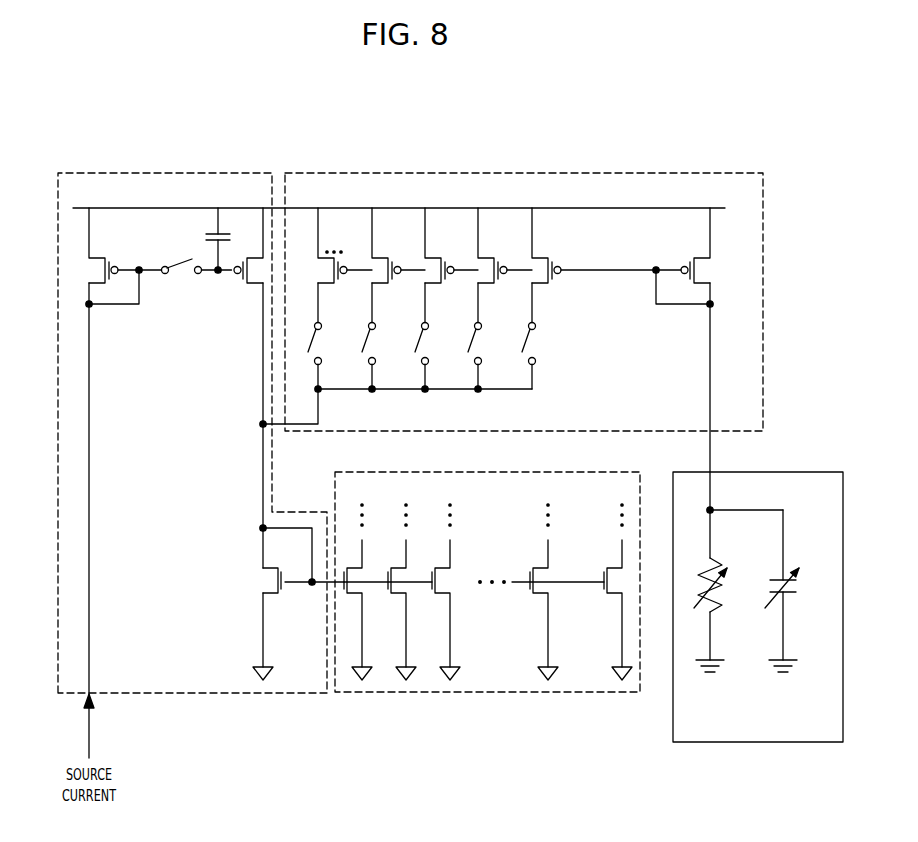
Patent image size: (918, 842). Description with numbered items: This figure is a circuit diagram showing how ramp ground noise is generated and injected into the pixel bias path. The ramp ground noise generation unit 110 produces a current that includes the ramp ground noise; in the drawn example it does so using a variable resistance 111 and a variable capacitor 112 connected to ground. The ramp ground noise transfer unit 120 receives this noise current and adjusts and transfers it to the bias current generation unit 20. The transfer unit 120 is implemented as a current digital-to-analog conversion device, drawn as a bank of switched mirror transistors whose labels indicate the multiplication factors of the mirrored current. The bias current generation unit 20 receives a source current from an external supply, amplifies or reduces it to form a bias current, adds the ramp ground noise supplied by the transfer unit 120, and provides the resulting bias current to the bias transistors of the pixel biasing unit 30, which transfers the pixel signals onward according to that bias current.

The bias current generation unit 20 is at (243, 173).
The ramp ground noise transfer unit 120 is at (728, 173).
The pixel biasing unit 30 is at (613, 472).
The ramp ground noise generation unit 110 is at (759, 523).
The variable resistance 111 is at (722, 612).
The variable capacitor 112 is at (795, 594).